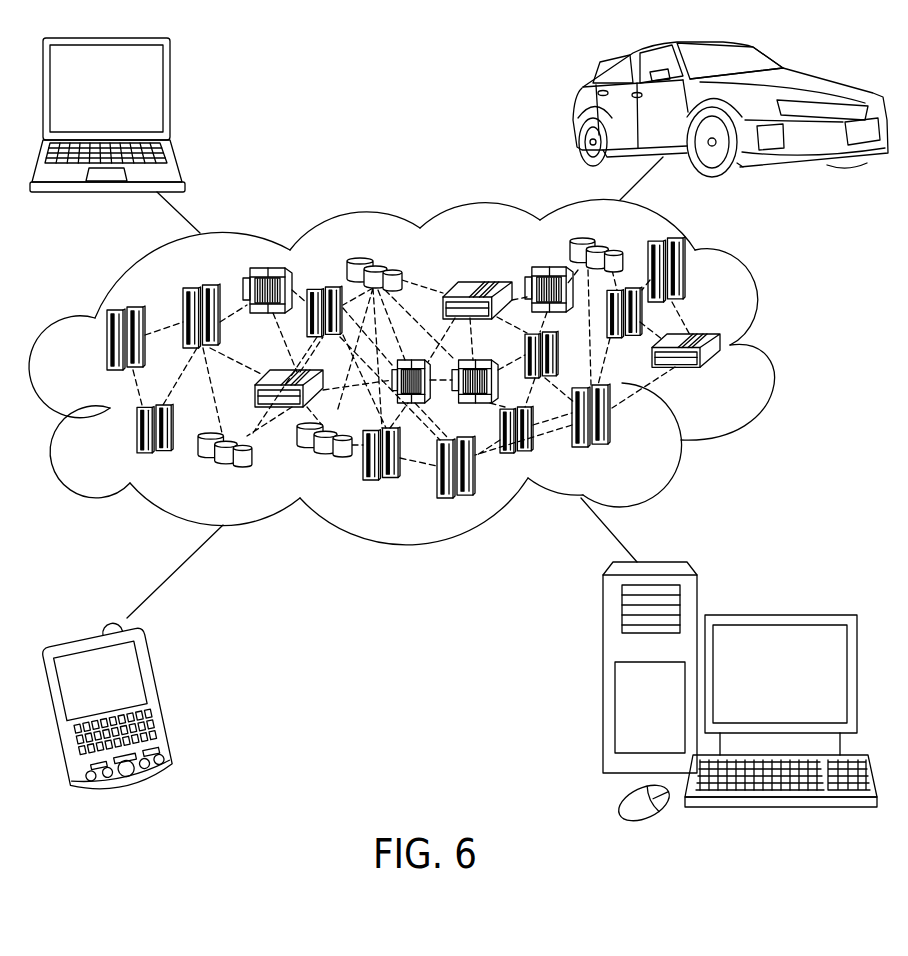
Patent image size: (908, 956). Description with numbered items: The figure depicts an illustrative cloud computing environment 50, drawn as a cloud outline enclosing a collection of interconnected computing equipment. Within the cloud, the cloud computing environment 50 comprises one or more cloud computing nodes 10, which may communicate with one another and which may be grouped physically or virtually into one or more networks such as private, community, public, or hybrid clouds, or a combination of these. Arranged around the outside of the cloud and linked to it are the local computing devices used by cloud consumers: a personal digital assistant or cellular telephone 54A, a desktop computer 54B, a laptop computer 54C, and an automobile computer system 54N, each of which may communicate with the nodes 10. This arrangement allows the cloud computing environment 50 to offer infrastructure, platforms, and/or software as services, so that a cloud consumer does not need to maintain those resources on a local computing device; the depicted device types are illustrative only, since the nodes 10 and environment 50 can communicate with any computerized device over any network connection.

The cloud computing node 10 is at (727, 377).
The cloud computing environment 50 is at (431, 372).
The personal digital assistant or cellular telephone 54A is at (163, 702).
The desktop computer 54B is at (777, 614).
The laptop computer 54C is at (170, 98).
The automobile computer system 54N is at (575, 112).